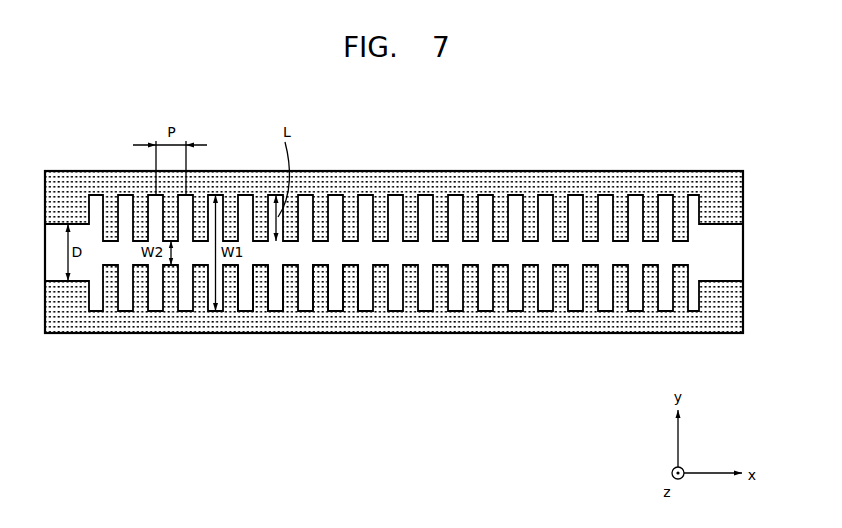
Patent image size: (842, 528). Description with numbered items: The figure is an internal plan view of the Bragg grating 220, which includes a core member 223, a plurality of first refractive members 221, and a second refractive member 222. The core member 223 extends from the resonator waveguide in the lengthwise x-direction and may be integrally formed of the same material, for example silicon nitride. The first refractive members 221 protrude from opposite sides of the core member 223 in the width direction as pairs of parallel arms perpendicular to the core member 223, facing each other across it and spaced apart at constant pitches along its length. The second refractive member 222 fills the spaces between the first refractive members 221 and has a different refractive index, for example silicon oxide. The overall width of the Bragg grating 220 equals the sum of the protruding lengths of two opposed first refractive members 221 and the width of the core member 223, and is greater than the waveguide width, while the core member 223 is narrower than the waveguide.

The Bragg grating 220 is at (687, 148).
The first refractive members 221 is at (275, 305).
The second refractive member 222 is at (350, 306).
The core member 223 is at (423, 257).